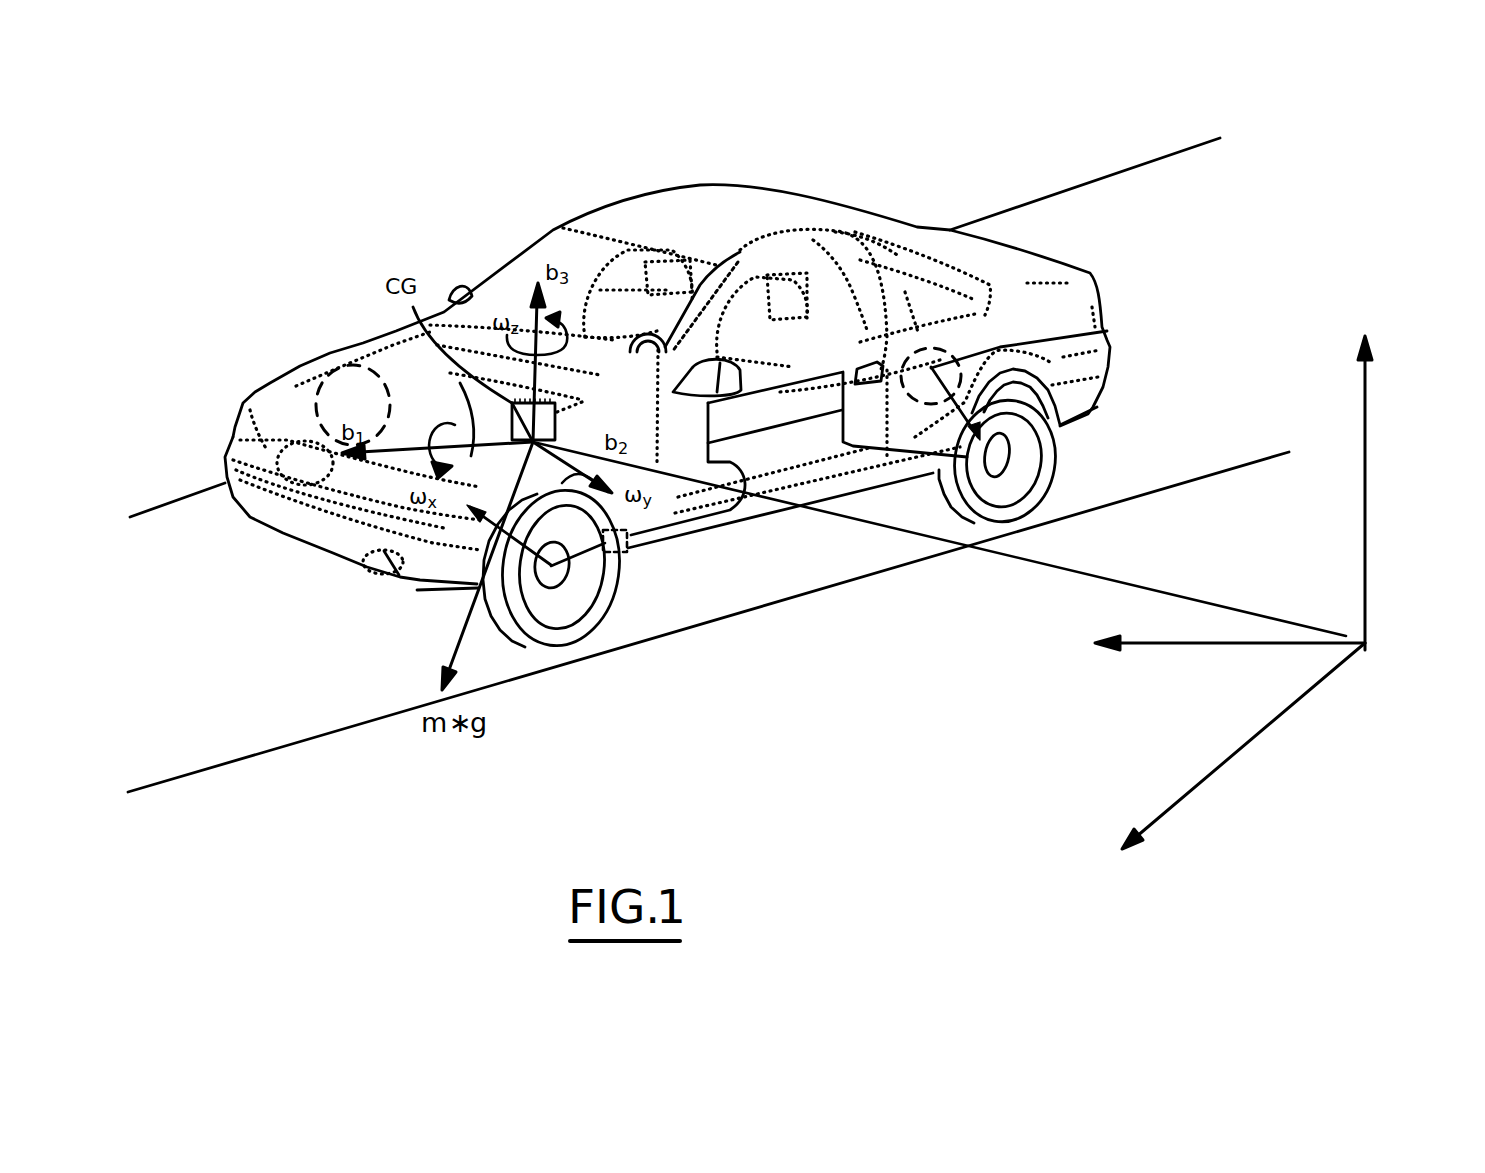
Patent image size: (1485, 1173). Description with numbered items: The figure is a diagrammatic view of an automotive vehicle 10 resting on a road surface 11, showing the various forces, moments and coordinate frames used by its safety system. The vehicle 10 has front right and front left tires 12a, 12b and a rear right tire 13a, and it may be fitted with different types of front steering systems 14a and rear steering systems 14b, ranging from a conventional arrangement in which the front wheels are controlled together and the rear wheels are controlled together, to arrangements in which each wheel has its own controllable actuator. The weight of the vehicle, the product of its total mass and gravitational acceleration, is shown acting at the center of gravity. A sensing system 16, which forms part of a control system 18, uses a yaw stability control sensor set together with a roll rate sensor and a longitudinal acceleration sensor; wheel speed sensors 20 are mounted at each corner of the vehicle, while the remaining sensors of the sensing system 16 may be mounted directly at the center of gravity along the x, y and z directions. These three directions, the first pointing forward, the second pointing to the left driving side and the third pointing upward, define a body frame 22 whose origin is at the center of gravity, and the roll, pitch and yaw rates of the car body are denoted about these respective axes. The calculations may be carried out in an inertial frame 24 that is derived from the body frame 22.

The automotive vehicle 10 is at (740, 186).
The road surface 11 is at (248, 618).
The front right tire 12a is at (286, 378).
The front left tire 12b is at (583, 617).
The rear right tire 13a is at (968, 341).
The front steering system 14a is at (467, 505).
The rear steering system 14b is at (1107, 331).
The sensing system 16 is at (557, 420).
The control system 18 is at (787, 383).
The wheel speed sensors 20 is at (607, 552).
The body frame 22 is at (447, 408).
The inertial frame 24 is at (1372, 649).